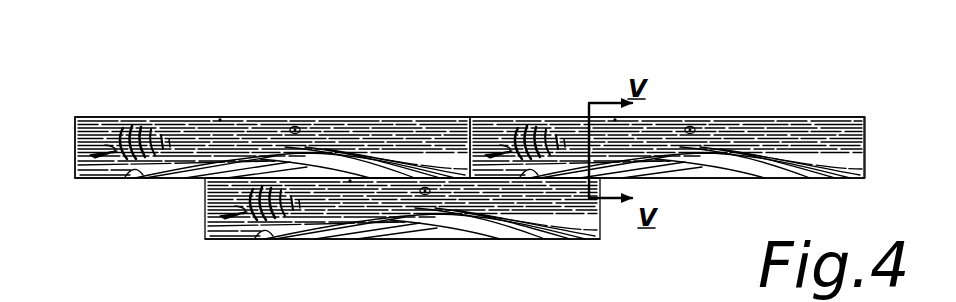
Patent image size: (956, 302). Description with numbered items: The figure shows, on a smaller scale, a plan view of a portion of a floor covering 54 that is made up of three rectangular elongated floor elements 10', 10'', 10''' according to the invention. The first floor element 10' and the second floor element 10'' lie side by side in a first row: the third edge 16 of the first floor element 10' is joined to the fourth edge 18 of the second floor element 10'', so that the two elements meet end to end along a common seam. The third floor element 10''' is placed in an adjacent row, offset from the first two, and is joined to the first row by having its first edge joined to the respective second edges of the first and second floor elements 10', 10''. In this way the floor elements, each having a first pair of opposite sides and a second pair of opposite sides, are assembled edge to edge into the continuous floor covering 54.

The floor covering 54 is at (785, 72).
The first floor element 10' is at (262, 142).
The second floor element 10'' is at (685, 131).
The third floor element 10''' is at (402, 237).
The third edge 16 is at (865, 150).
The fourth edge 18 is at (78, 134).